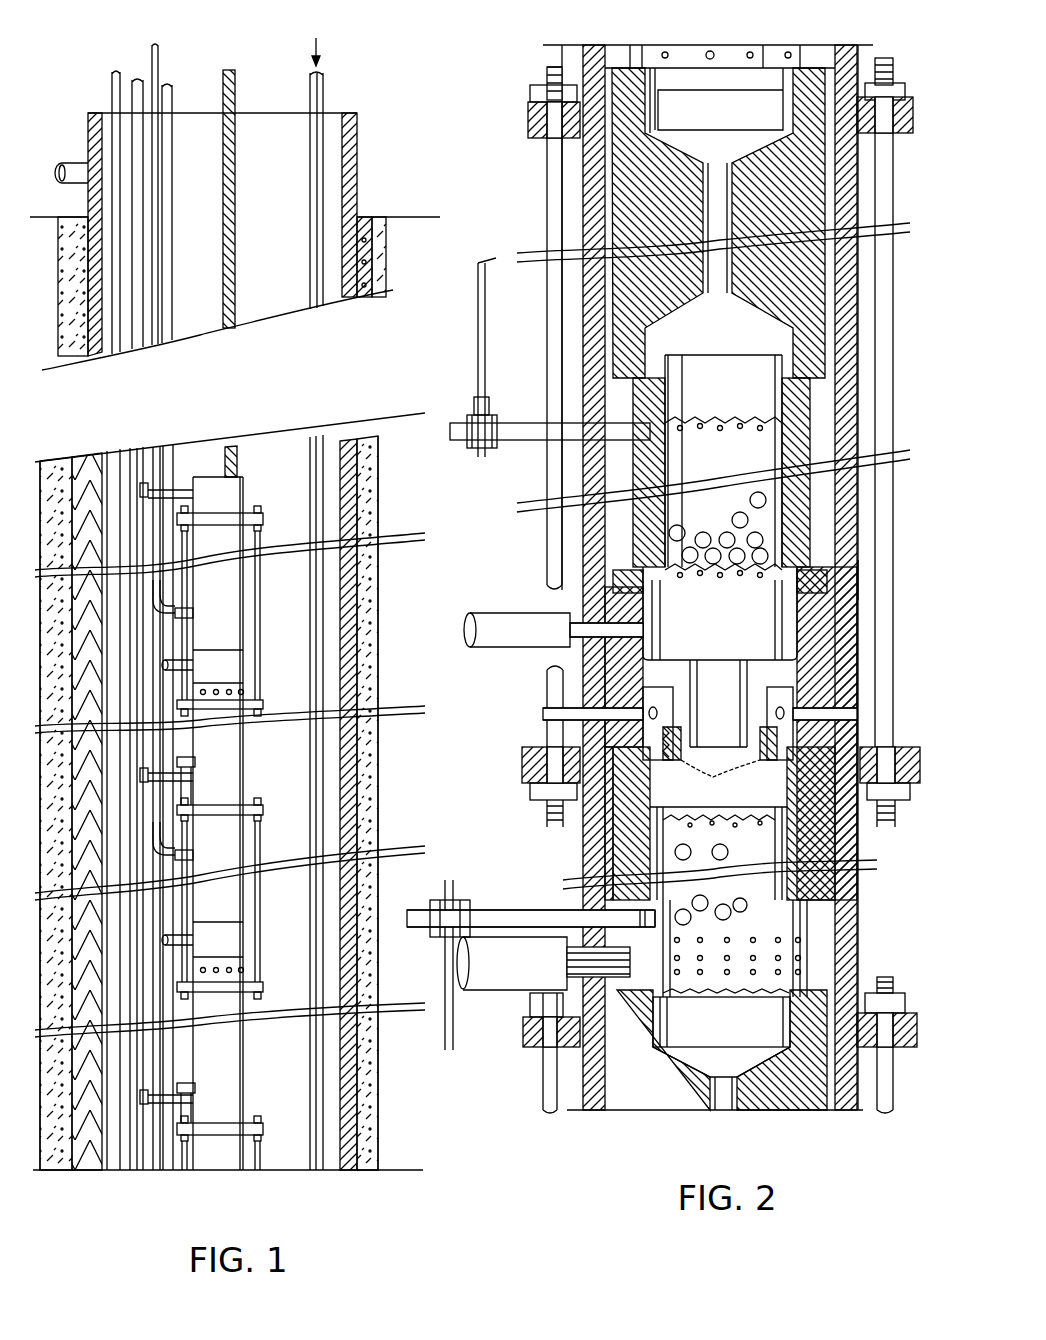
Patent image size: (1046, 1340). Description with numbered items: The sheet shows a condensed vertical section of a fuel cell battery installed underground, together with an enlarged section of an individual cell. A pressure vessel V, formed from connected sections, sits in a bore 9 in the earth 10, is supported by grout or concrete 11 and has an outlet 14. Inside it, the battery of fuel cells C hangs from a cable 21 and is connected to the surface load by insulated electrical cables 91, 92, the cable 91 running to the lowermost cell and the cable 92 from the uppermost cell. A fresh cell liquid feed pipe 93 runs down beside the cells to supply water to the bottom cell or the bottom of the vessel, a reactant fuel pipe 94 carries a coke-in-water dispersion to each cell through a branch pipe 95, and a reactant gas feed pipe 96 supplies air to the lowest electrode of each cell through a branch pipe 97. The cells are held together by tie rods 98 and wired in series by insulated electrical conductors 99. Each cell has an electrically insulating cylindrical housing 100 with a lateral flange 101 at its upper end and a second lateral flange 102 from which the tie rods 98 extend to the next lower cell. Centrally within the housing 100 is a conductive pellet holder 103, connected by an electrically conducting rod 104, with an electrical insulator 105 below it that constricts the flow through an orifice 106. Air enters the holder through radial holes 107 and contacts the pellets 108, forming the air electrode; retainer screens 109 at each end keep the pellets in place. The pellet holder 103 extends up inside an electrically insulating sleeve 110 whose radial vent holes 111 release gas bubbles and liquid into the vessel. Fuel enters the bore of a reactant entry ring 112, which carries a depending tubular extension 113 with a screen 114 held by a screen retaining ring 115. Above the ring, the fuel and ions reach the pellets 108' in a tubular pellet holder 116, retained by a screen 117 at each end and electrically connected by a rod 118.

In FIG. 1, the bore 9 is at (380, 250).
In FIG. 1, the earth 10 is at (398, 217).
In FIG. 1, the grout or concrete 11 is at (370, 217).
In FIG. 1, the outlet 14 is at (72, 158).
In FIG. 1, the cable 21 is at (236, 78).
In FIG. 1, the insulated electrical cable 91 is at (112, 90).
In FIG. 1, the insulated electrical cable 92 is at (160, 64).
In FIG. 1, the fresh cell liquid feed pipe 93 is at (324, 80).
In FIG. 1, the reactant fuel pipe 94 is at (174, 92).
In FIG. 1, the branch pipe 95 is at (194, 665).
In FIG. 2, the branch pipe 95 is at (518, 613).
In FIG. 1, the reactant gas feed pipe 96 is at (132, 82).
In FIG. 1, the branch pipe 97 is at (190, 488).
In FIG. 2, the branch pipe 97 is at (500, 990).
In FIG. 1, the tie rods 98 is at (261, 640).
In FIG. 2, the tie rods 98 is at (895, 152).
In FIG. 1, the insulated electrical conductor 99 is at (167, 1190).
In FIG. 2, the insulated electrical conductor 99 is at (478, 333).
In FIG. 1, the cylindrical housing 100 is at (244, 545).
In FIG. 2, the cylindrical housing 100 is at (575, 160).
In FIG. 1, the lateral flange 101 is at (264, 704).
In FIG. 2, the lateral flange 101 is at (535, 748).
In FIG. 1, the second lateral flange 102 is at (263, 513).
In FIG. 2, the second lateral flange 102 is at (912, 98).
In FIG. 2, the pellet holder 103 is at (735, 45).
In FIG. 1, the electrically conducting rod 104 is at (196, 762).
In FIG. 2, the electrically conducting rod 104 is at (525, 910).
In FIG. 2, the electrical insulator 105 is at (612, 230).
In FIG. 2, the orifice 106 is at (710, 172).
In FIG. 2, the radial holes 107 is at (666, 50).
In FIG. 2, the pellets 108 is at (738, 909).
In FIG. 2, the pellets 108' is at (718, 525).
In FIG. 2, the retainer screens 109 is at (700, 812).
In FIG. 2, the electrically insulating sleeve 110 is at (855, 850).
In FIG. 1, the radial vent holes 111 is at (245, 692).
In FIG. 2, the radial vent holes 111 is at (585, 712).
In FIG. 1, the reactant entry ring 112 is at (246, 672).
In FIG. 2, the reactant entry ring 112 is at (860, 598).
In FIG. 2, the tubular extension 113 is at (745, 715).
In FIG. 2, the screen 114 is at (742, 772).
In FIG. 2, the screen retaining ring 115 is at (663, 762).
In FIG. 2, the tubular pellet holder 116 is at (675, 395).
In FIG. 2, the screen 117 is at (730, 420).
In FIG. 1, the rod 118 is at (192, 612).
In FIG. 2, the rod 118 is at (535, 440).
In FIG. 1, the fuel cells C is at (240, 620).
In FIG. 1, the pressure vessel V is at (362, 146).